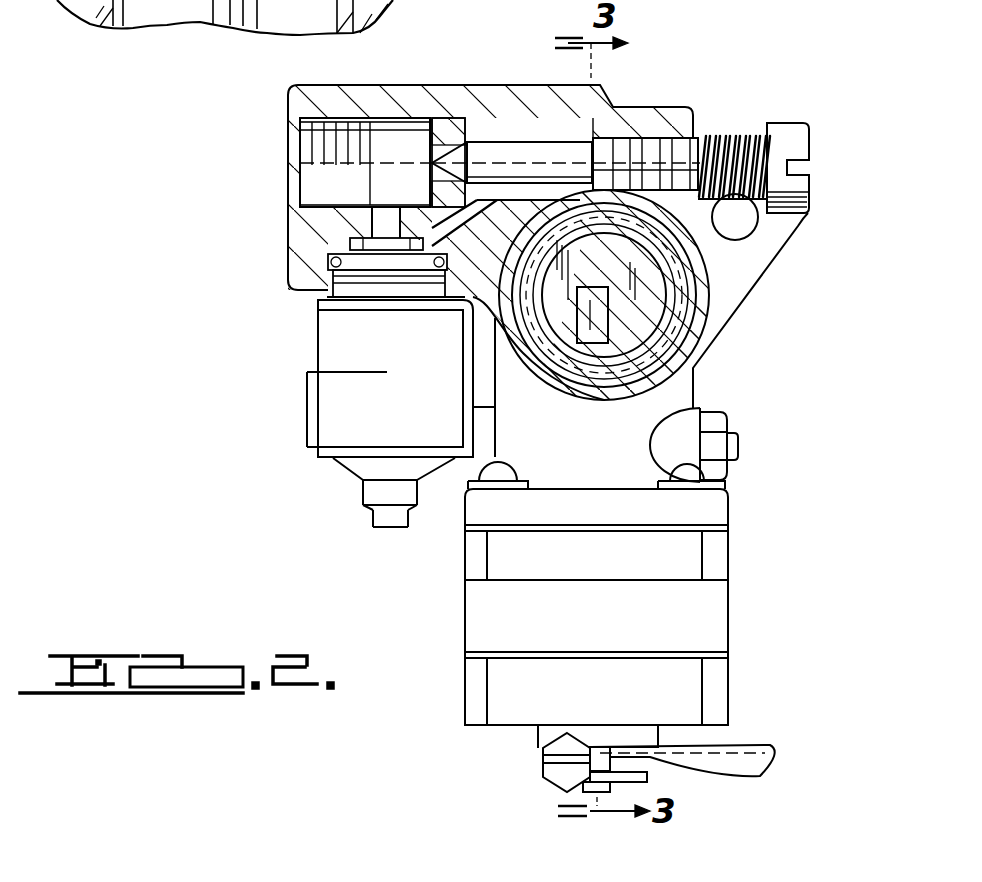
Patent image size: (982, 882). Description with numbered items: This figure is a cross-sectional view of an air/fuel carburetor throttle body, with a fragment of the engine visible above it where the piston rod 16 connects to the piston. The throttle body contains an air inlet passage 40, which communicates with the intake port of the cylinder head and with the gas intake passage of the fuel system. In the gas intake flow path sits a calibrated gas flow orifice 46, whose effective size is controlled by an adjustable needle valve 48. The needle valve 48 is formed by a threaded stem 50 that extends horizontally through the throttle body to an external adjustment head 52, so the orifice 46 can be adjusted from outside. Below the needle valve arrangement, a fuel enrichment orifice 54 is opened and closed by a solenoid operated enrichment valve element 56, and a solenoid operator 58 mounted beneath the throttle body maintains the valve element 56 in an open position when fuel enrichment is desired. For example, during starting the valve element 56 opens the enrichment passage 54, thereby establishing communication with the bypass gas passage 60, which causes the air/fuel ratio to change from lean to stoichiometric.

The piston rod 16 is at (231, 18).
The air inlet passage 40 is at (386, 136).
The calibrated gas flow orifice 46 is at (430, 174).
The adjustable needle valve 48 is at (492, 152).
The threaded stem 50 is at (646, 150).
The external adjustment head 52 is at (793, 130).
The fuel enrichment orifice 54 is at (383, 216).
The solenoid operated enrichment valve element 56 is at (360, 241).
The solenoid operator 58 is at (328, 419).
The bypass gas passage 60 is at (465, 232).